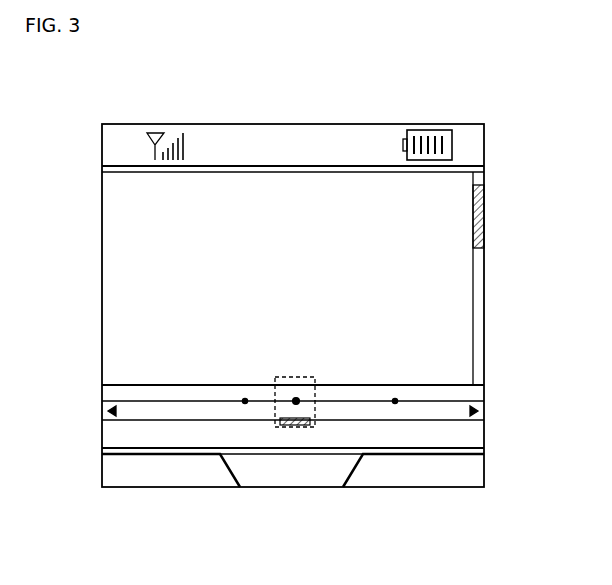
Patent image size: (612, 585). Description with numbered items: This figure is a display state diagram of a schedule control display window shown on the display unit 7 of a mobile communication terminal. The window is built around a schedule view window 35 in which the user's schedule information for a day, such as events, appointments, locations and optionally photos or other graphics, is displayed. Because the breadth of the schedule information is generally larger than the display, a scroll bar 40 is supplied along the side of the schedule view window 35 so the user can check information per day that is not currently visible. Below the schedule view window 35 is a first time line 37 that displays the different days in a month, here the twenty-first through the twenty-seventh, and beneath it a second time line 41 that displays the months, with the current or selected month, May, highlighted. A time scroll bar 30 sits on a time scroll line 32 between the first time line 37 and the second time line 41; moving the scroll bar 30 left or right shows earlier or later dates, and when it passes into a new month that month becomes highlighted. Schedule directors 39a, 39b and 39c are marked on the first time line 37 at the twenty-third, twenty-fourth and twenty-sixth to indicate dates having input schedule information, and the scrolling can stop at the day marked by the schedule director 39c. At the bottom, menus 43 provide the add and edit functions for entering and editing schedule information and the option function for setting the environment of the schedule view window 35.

The display unit 7 is at (437, 124).
The time scroll bar 30 is at (306, 426).
The time scroll line 32 is at (265, 420).
The schedule view window 35 is at (118, 321).
The first time line 37 is at (107, 410).
The schedule director 39a is at (245, 401).
The schedule director 39b is at (296, 401).
The schedule director 39c is at (395, 401).
The scroll bar 40 is at (485, 215).
The second time line 41 is at (120, 436).
The menus 43 is at (110, 470).